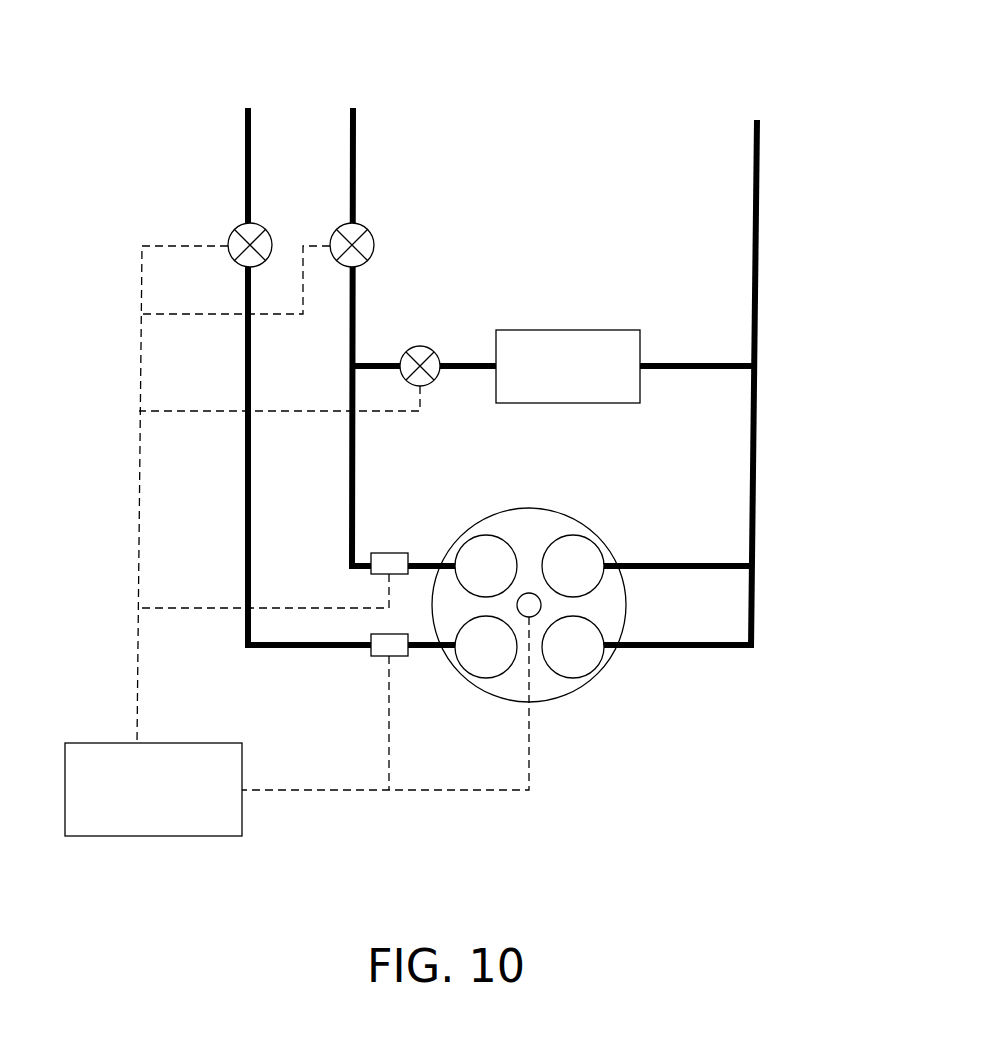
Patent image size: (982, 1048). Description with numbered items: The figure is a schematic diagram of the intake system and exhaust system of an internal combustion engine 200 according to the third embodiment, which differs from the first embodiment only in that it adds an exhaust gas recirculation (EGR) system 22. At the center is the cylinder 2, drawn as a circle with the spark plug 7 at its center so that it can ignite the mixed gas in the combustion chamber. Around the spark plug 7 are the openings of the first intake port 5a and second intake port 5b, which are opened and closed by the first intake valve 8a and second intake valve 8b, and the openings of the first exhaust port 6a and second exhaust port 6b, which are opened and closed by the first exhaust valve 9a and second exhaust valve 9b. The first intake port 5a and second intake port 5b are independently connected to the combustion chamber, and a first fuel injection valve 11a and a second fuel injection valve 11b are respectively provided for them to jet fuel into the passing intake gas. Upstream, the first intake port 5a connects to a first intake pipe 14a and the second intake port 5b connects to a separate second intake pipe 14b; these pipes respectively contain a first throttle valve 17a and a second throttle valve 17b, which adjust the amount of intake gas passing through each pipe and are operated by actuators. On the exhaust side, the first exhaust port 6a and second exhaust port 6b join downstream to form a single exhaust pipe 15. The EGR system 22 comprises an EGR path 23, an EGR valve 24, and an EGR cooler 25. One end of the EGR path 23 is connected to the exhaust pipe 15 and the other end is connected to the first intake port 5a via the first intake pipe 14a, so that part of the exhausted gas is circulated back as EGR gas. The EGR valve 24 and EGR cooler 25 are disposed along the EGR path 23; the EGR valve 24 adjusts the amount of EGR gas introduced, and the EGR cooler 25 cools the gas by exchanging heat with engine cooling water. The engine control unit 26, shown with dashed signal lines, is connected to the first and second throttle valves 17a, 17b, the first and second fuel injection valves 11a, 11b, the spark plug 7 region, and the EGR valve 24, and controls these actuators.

The internal combustion engine 200 is at (539, 117).
The cylinder 2 is at (553, 700).
The first intake port 5a is at (426, 563).
The second intake port 5b is at (425, 650).
The first exhaust port 6a is at (676, 563).
The second exhaust port 6b is at (690, 650).
The spark plug 7 is at (532, 592).
The first intake valve 8a is at (481, 536).
The second intake valve 8b is at (490, 680).
The first exhaust valve 9a is at (596, 538).
The second exhaust valve 9b is at (590, 682).
The first fuel injection valve 11a is at (385, 553).
The second fuel injection valve 11b is at (373, 657).
The first intake pipe 14a is at (358, 155).
The second intake pipe 14b is at (244, 155).
The exhaust pipe 15 is at (760, 346).
The first throttle valve 17a is at (372, 240).
The second throttle valve 17b is at (233, 236).
The exhaust gas recirculation (EGR) system 22 is at (622, 233).
The EGR path 23 is at (688, 366).
The EGR valve 24 is at (424, 345).
The EGR cooler 25 is at (566, 330).
The engine control unit (ECU) 26 is at (178, 836).